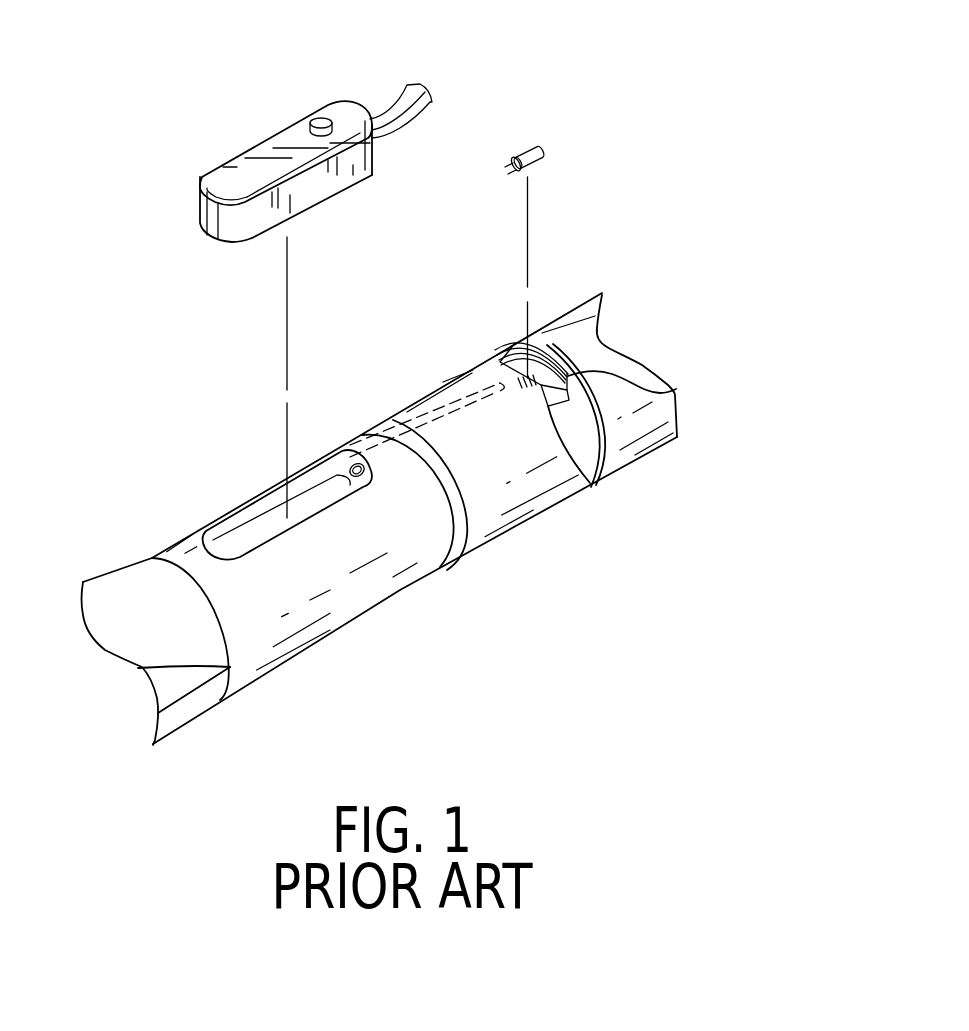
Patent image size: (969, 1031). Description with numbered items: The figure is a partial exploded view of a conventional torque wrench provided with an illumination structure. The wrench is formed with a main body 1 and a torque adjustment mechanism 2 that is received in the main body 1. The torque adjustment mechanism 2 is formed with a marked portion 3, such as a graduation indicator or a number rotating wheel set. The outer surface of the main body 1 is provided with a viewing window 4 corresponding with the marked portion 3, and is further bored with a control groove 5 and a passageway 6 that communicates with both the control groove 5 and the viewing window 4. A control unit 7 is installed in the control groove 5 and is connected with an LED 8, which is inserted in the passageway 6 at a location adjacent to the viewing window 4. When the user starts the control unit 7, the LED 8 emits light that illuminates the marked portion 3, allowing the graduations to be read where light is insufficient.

The main body 1 is at (517, 530).
The torque adjustment mechanism 2 is at (676, 389).
The marked portion 3 is at (531, 379).
The viewing window 4 is at (590, 487).
The control groove 5 is at (253, 507).
The passageway 6 is at (447, 413).
The control unit 7 is at (263, 138).
The LED 8 is at (525, 146).